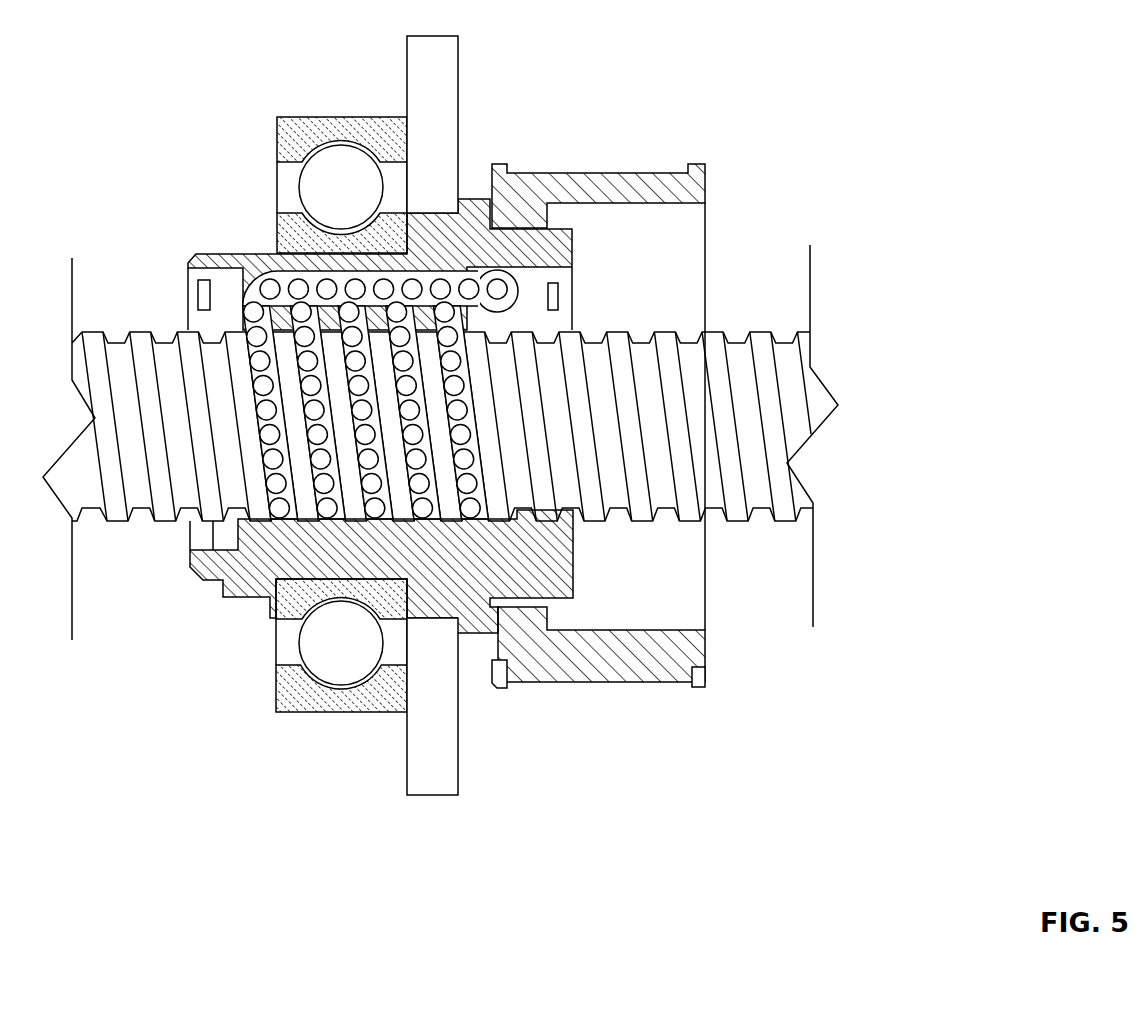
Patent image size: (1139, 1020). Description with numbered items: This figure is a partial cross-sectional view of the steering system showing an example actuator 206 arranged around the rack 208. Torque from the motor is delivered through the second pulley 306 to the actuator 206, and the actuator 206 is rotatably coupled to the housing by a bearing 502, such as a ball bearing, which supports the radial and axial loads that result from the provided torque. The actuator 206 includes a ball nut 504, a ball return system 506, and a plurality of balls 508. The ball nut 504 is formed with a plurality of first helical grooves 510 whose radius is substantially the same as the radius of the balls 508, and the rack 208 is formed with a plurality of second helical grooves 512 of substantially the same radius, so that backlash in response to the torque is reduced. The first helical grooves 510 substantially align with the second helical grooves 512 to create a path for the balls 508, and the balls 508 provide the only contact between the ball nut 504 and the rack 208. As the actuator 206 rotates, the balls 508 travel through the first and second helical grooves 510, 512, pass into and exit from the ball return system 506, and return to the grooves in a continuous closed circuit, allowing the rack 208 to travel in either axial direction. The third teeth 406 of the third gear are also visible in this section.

The actuator 206 is at (247, 50).
The rack 208 is at (718, 333).
The second pulley 306 is at (597, 172).
The third teeth 406 is at (458, 98).
The bearing 502 is at (338, 117).
The ball nut 504 is at (228, 592).
The ball return system 506 is at (243, 290).
The balls 508 is at (268, 406).
The first helical grooves 510 is at (473, 518).
The second helical grooves 512 is at (663, 509).